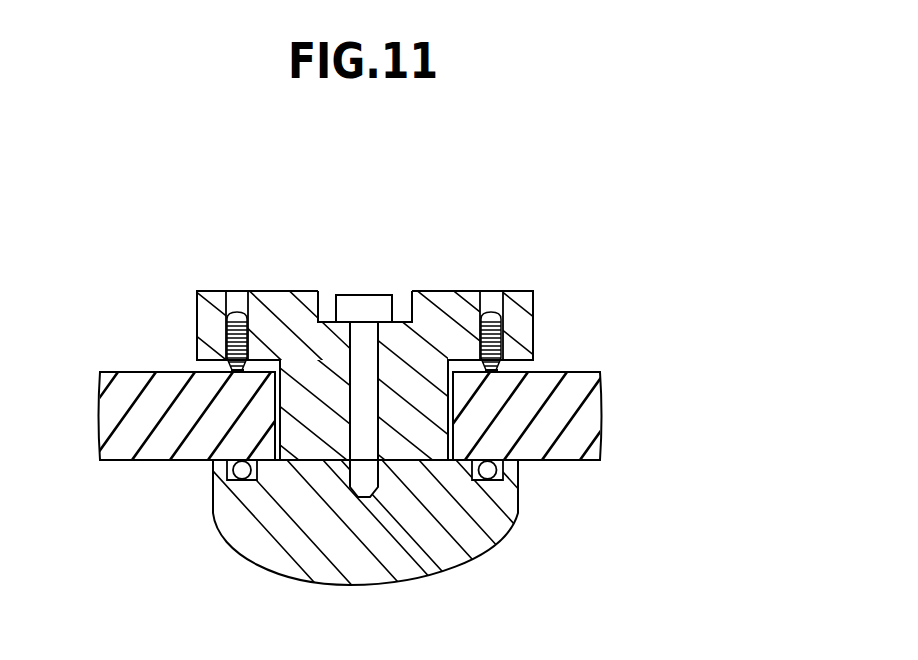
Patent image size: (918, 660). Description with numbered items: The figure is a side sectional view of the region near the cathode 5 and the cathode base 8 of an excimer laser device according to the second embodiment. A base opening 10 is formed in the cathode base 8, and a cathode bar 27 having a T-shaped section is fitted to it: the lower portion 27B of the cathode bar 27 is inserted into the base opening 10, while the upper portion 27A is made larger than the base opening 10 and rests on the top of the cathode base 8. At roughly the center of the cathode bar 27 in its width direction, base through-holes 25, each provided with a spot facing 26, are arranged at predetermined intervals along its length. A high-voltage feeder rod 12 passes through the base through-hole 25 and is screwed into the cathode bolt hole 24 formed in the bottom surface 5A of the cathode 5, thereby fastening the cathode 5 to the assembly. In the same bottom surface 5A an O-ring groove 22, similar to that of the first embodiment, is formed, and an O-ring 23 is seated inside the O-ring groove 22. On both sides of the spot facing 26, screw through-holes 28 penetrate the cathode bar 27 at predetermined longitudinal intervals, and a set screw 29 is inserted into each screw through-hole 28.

The cathode 5 is at (517, 518).
The bottom surface of the cathode 5A is at (218, 461).
The cathode base 8 is at (125, 385).
The base opening 10 is at (280, 392).
The high-voltage feeder rod 12 is at (372, 295).
The O-ring groove 22 is at (238, 470).
The O-ring 23 is at (243, 483).
The cathode bolt hole 24 is at (351, 470).
The base through-hole 25 is at (350, 377).
The spot facing 26 is at (318, 303).
The cathode bar 27 is at (465, 363).
The upper portion of the cathode bar 27A is at (533, 300).
The lower portion of the cathode bar 27B is at (437, 408).
The screw through-hole 28 is at (238, 306).
The set screw 29 is at (231, 368).